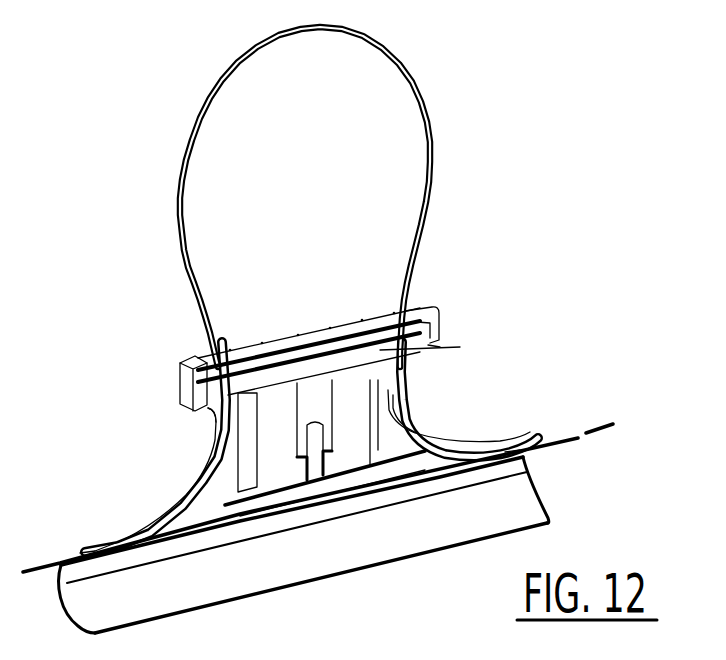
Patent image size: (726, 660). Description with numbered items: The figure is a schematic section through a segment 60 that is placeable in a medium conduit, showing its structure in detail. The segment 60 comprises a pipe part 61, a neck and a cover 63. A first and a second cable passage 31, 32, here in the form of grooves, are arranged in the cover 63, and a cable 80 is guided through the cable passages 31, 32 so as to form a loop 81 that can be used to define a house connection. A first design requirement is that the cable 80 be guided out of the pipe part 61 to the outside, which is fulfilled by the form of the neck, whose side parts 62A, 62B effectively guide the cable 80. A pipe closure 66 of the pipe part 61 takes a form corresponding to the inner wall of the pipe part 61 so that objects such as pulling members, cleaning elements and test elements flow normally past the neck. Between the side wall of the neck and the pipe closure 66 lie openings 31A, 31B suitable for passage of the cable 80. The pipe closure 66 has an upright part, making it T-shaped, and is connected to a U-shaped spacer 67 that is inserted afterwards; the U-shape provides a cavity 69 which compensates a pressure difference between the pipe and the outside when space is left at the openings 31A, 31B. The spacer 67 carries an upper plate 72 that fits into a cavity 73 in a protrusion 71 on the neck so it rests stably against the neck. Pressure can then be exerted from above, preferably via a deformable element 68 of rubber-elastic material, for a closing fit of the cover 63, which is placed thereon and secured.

The segment 60 is at (608, 180).
The pipe part 61 is at (360, 540).
The side part of neck 62A is at (190, 483).
The side part of neck 62B is at (417, 400).
The cover 63 is at (295, 322).
The pipe closure 66 is at (295, 498).
The spacer 67 is at (353, 388).
The deformable element 68 is at (364, 388).
The cavity 69 is at (233, 458).
The protrusion 71 is at (445, 363).
The upper plate 72 is at (405, 426).
The cavity 73 is at (440, 347).
The cable 80 is at (584, 436).
The loop 81 is at (412, 80).
The first cable passage 31 is at (190, 337).
The opening 31A is at (197, 560).
The opening 31B is at (458, 487).
The second cable passage 32 is at (425, 291).